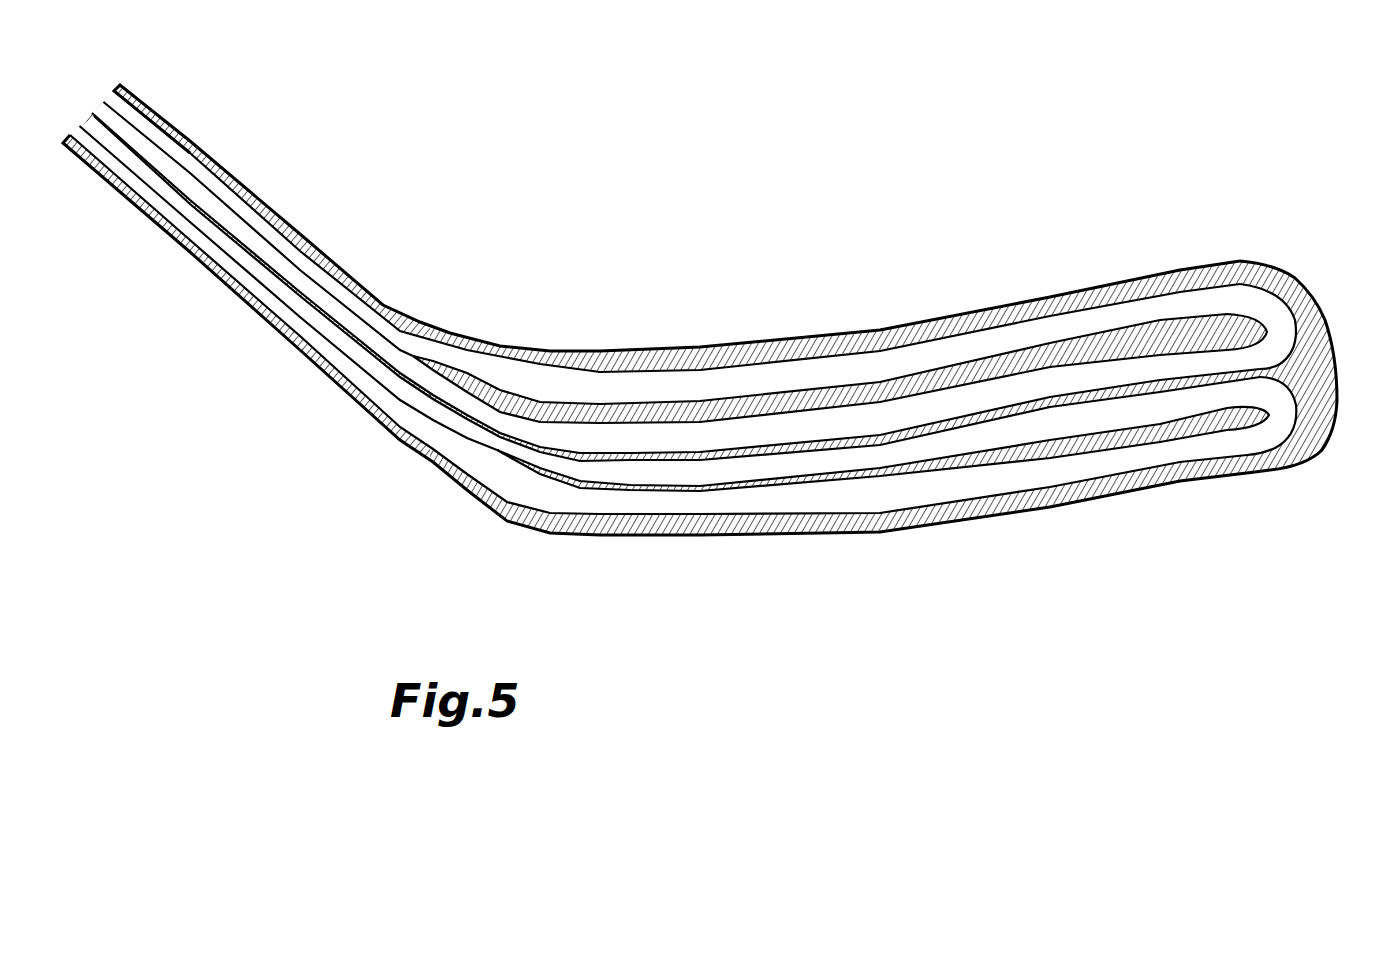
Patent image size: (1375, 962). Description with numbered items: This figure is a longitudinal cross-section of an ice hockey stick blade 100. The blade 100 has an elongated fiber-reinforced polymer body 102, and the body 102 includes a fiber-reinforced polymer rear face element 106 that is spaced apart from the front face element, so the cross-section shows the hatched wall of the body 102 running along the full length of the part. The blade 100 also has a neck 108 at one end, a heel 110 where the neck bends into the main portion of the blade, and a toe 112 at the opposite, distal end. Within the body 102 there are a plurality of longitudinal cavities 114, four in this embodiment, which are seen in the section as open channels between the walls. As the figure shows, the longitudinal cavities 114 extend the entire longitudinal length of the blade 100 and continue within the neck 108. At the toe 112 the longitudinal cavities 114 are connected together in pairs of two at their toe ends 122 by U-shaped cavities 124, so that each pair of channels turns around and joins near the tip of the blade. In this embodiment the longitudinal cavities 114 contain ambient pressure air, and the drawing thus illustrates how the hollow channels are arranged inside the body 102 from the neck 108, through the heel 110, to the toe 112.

The ice hockey stick blade 100 is at (719, 355).
The elongated fiber-reinforced polymer body 102 is at (1280, 460).
The fiber-reinforced polymer rear face element 106 is at (918, 338).
The neck 108 is at (124, 262).
The heel 110 is at (531, 557).
The toe 112 is at (1350, 404).
The longitudinal cavities 114 is at (668, 507).
The toe ends 122 is at (1213, 365).
The U-shaped cavities 124 is at (1268, 318).